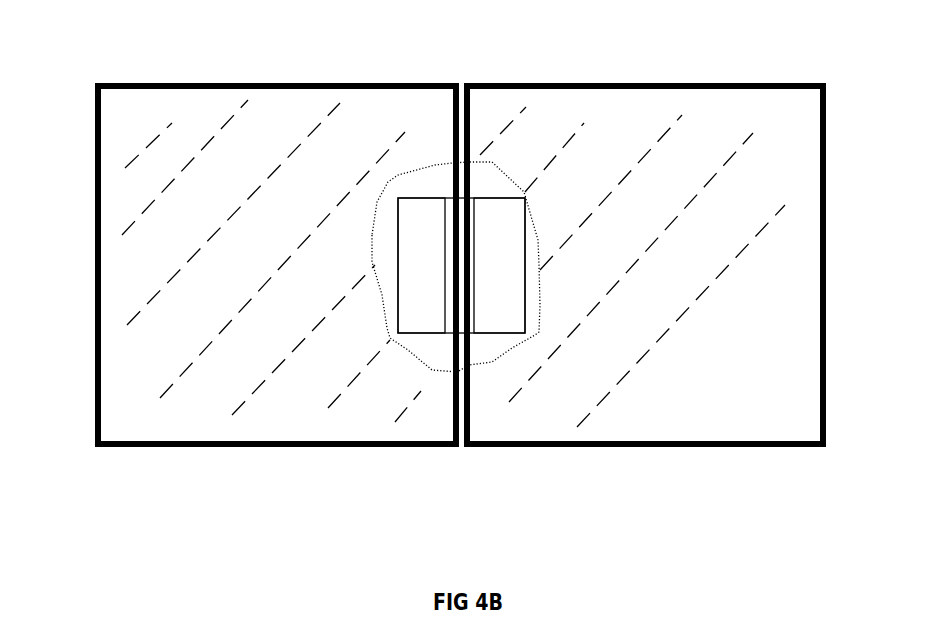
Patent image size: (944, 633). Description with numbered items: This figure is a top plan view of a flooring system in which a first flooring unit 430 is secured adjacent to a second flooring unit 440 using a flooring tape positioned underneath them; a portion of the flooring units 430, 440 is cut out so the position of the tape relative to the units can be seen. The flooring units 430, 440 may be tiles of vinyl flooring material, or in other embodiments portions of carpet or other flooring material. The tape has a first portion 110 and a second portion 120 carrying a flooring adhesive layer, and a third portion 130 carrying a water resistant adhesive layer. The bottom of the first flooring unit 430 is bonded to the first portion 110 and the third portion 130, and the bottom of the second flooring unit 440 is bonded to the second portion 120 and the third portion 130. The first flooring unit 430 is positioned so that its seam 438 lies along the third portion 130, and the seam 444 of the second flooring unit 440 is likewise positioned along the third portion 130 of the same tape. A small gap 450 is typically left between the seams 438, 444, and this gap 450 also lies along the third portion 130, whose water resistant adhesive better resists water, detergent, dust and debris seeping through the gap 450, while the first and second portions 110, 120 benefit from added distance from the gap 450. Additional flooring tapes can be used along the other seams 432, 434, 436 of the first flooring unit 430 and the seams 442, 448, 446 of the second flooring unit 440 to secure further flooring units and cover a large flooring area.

The first portion 110 is at (421, 265).
The second portion 120 is at (499, 265).
The third portion 130 is at (477, 189).
The first flooring unit 430 is at (239, 259).
The seam 432 is at (223, 84).
The seam 434 is at (95, 140).
The seam 436 is at (137, 449).
The seam 438 is at (452, 423).
The second flooring unit 440 is at (680, 260).
The seam 442 is at (647, 84).
The seam 444 is at (467, 423).
The seam 446 is at (733, 449).
The seam 448 is at (826, 190).
The gap 450 is at (460, 447).